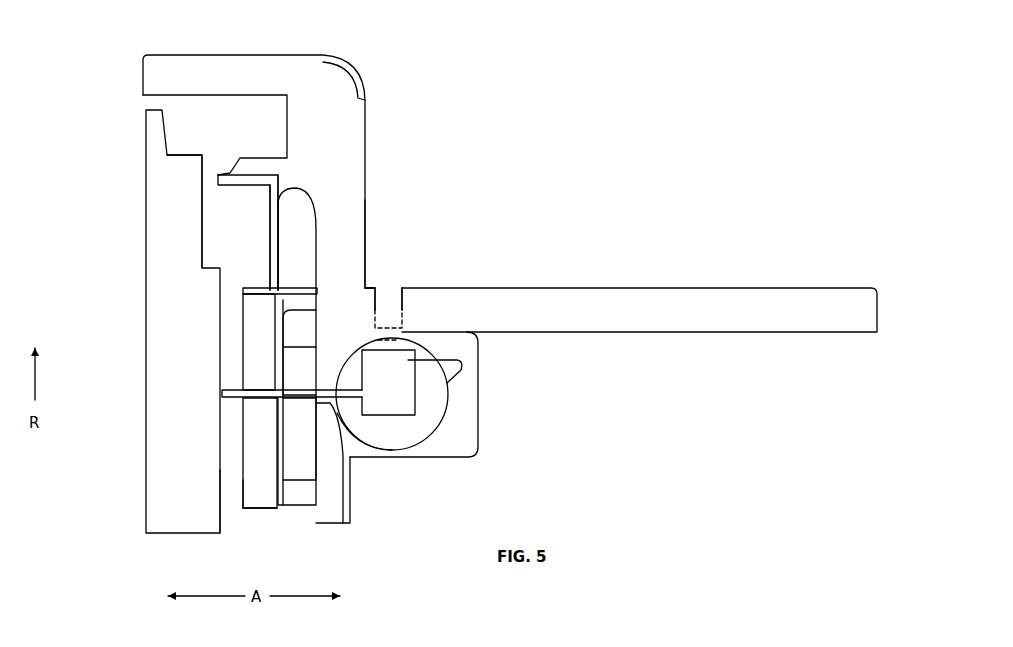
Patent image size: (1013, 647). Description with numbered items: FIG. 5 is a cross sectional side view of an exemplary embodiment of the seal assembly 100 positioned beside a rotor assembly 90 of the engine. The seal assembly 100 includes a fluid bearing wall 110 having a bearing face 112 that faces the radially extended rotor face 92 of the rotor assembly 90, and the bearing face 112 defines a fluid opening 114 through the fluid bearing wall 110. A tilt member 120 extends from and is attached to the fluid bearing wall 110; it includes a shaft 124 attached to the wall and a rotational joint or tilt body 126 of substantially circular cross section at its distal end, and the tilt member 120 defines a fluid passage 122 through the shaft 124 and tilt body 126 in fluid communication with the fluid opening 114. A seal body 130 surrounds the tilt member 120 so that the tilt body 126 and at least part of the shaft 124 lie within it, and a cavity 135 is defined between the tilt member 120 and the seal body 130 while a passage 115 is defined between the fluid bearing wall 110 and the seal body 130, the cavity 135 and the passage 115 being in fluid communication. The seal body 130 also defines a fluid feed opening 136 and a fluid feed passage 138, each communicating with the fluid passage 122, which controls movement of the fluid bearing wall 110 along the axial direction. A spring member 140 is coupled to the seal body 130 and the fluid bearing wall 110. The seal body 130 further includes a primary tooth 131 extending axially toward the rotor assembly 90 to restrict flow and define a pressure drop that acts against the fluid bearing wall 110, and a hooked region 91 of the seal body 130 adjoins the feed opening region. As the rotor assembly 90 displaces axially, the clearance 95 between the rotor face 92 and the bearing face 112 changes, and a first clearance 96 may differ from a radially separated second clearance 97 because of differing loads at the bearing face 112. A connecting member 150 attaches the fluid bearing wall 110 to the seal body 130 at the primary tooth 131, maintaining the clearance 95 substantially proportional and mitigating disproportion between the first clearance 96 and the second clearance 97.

The rotor assembly 90 is at (155, 363).
The hook portion 91 is at (404, 216).
The rotor face 92 is at (212, 156).
The clearance 95 is at (282, 375).
The first clearance 96 is at (222, 302).
The second clearance 97 is at (242, 485).
The seal assembly 100 is at (392, 79).
The fluid bearing wall 110 is at (237, 506).
The bearing face 112 is at (239, 342).
The fluid opening 114 is at (239, 405).
The passage 115 is at (299, 352).
The tilt member 120 is at (312, 412).
The fluid passage 122 is at (410, 359).
The shaft 124 is at (288, 408).
The tilt body 126 is at (422, 425).
The seal body 130 is at (645, 288).
The primary tooth 131 is at (245, 148).
The cavity 135 is at (465, 367).
The fluid feed opening 136 is at (400, 280).
The fluid feed passage 138 is at (404, 312).
The spring member 140 is at (305, 287).
The connecting member 150 is at (265, 215).